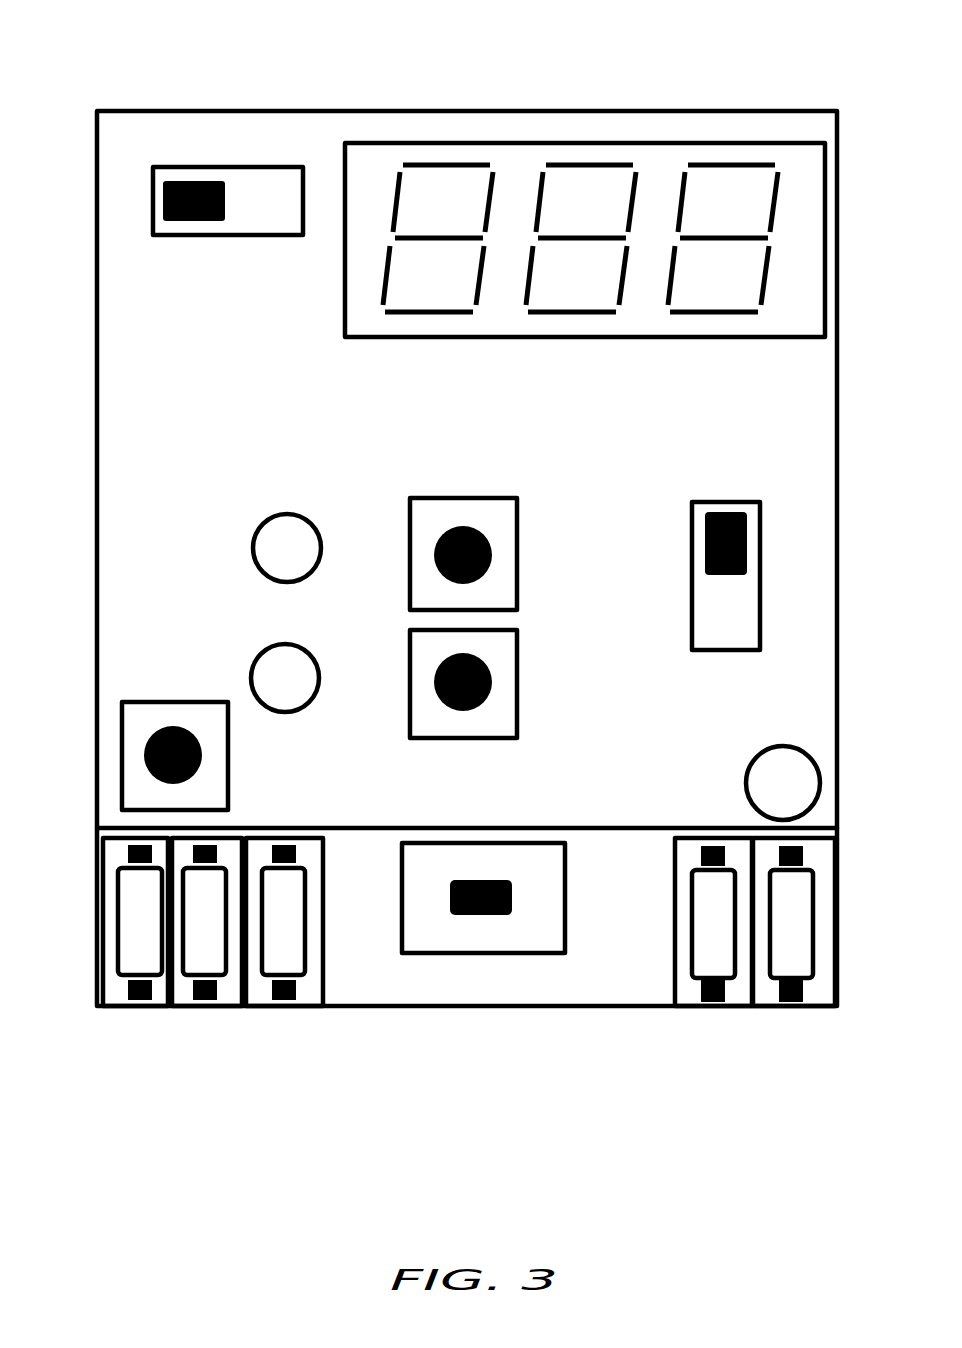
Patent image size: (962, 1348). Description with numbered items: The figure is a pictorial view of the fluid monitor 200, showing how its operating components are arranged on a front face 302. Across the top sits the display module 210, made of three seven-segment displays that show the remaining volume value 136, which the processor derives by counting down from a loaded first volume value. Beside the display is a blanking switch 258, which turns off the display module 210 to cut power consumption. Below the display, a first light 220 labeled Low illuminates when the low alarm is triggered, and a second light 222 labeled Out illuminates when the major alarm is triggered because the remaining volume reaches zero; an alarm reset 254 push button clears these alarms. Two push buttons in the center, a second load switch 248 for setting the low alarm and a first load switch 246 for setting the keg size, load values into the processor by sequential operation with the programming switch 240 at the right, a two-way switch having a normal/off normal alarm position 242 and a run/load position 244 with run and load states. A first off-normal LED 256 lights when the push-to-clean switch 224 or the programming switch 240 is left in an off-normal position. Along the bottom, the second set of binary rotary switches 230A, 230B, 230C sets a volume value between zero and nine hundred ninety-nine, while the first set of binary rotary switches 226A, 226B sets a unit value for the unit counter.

The fluid monitor 200 is at (158, 50).
The front face 302 is at (95, 183).
The blanking switch 258 is at (165, 238).
The display module 210 is at (380, 338).
The remaining volume value 136 is at (676, 320).
The first light 220 is at (262, 518).
The second light 222 is at (265, 640).
The second load switch 248 is at (490, 496).
The first load switch 246 is at (502, 742).
The programming switch 240 is at (762, 571).
The normal/off normal alarm position 242 is at (746, 470).
The run/load position 244 is at (758, 670).
The alarm reset 254 is at (160, 700).
The first off-normal LED 256 is at (820, 798).
The push-to-clean switch 224 is at (567, 883).
The binary rotary switch 230A is at (116, 1008).
The binary rotary switch 230B is at (188, 1008).
The binary rotary switch 230C is at (290, 1008).
The binary rotary switch 226A is at (697, 1008).
The binary rotary switch 226B is at (790, 1008).